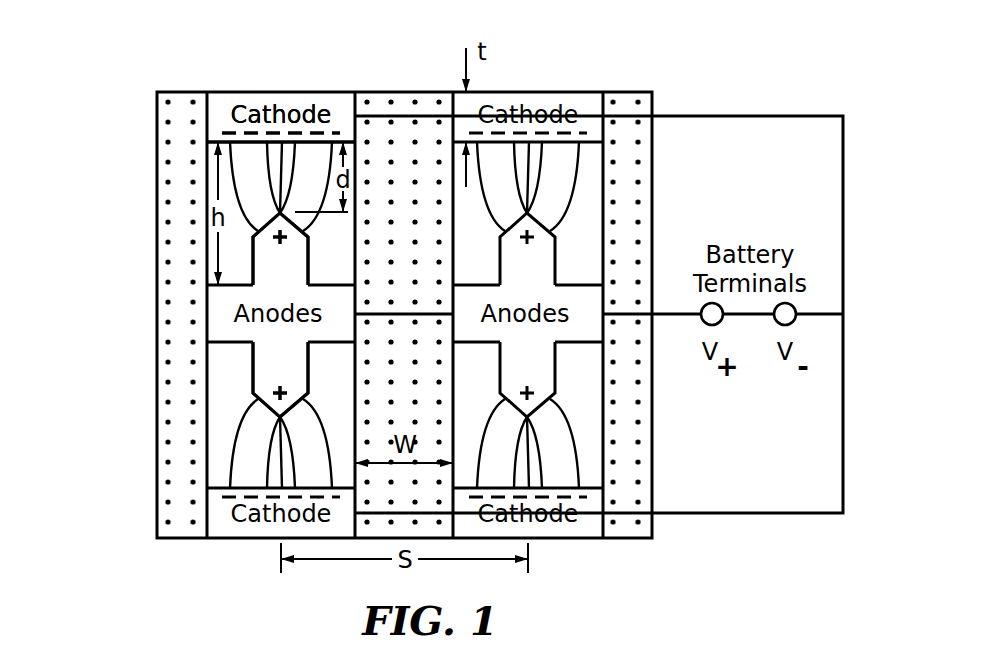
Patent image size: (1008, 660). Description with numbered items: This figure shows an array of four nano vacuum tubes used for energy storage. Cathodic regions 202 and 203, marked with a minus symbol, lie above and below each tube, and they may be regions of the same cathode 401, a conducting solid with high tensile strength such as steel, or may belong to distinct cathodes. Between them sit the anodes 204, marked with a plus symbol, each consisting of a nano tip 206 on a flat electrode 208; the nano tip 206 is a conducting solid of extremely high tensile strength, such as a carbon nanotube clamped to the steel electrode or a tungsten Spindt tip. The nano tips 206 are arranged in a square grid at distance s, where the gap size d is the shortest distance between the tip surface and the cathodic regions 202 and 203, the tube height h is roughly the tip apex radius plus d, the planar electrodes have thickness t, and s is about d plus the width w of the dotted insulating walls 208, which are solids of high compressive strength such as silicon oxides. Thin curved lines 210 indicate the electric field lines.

The cathodic region 202 is at (220, 530).
The cathodic region 203 is at (222, 102).
The anode 204 is at (222, 314).
The nano tip 206 is at (272, 421).
The flat electrode 208 is at (280, 285).
The electric field lines 210 is at (232, 465).
The cathode 401 is at (290, 74).